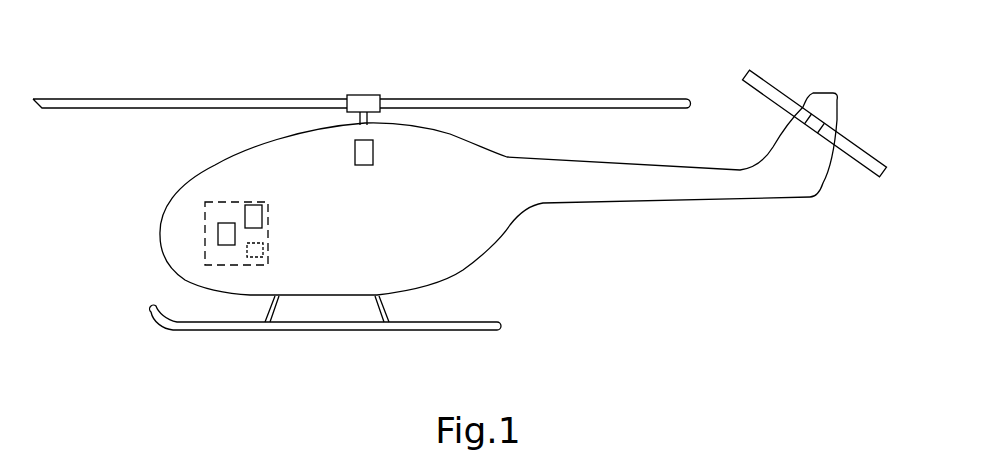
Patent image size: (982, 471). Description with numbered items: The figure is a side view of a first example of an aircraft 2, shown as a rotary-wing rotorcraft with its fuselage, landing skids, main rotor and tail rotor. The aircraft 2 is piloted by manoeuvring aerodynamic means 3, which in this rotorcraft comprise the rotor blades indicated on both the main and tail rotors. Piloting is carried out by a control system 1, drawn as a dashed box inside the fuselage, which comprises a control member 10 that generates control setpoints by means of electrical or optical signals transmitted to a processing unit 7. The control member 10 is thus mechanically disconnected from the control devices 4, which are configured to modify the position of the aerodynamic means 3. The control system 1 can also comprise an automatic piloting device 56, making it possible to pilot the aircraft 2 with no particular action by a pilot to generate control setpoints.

The control system 1 is at (205, 223).
The aircraft 2 is at (488, 252).
The aerodynamic means 3 is at (596, 97).
The control devices 4 is at (373, 152).
The processing unit 7 is at (243, 210).
The control member 10 is at (217, 233).
The automatic piloting device 56 is at (263, 250).